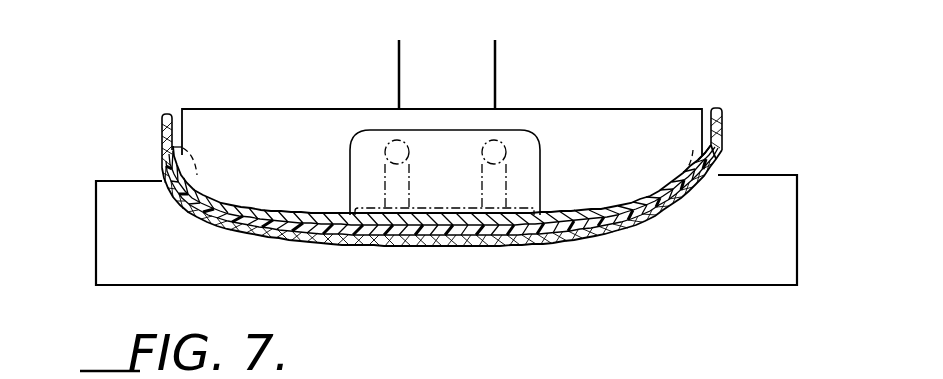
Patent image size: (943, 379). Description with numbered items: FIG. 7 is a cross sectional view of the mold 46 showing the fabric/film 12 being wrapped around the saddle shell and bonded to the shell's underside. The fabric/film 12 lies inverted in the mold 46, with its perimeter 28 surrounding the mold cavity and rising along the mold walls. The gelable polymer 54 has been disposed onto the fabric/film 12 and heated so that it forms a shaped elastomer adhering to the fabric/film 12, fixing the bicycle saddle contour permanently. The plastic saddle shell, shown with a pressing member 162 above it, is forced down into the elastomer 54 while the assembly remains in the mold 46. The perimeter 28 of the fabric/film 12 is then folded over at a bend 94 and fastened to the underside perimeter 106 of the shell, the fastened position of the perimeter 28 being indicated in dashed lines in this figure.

The press platen 162 is at (607, 110).
The perimeter 28 is at (724, 124).
The fold 94 is at (712, 158).
The underside perimeter 106 is at (683, 183).
The fabric/film 12 is at (646, 221).
The gelable polymer 54 is at (590, 228).
The mold 46 is at (789, 233).